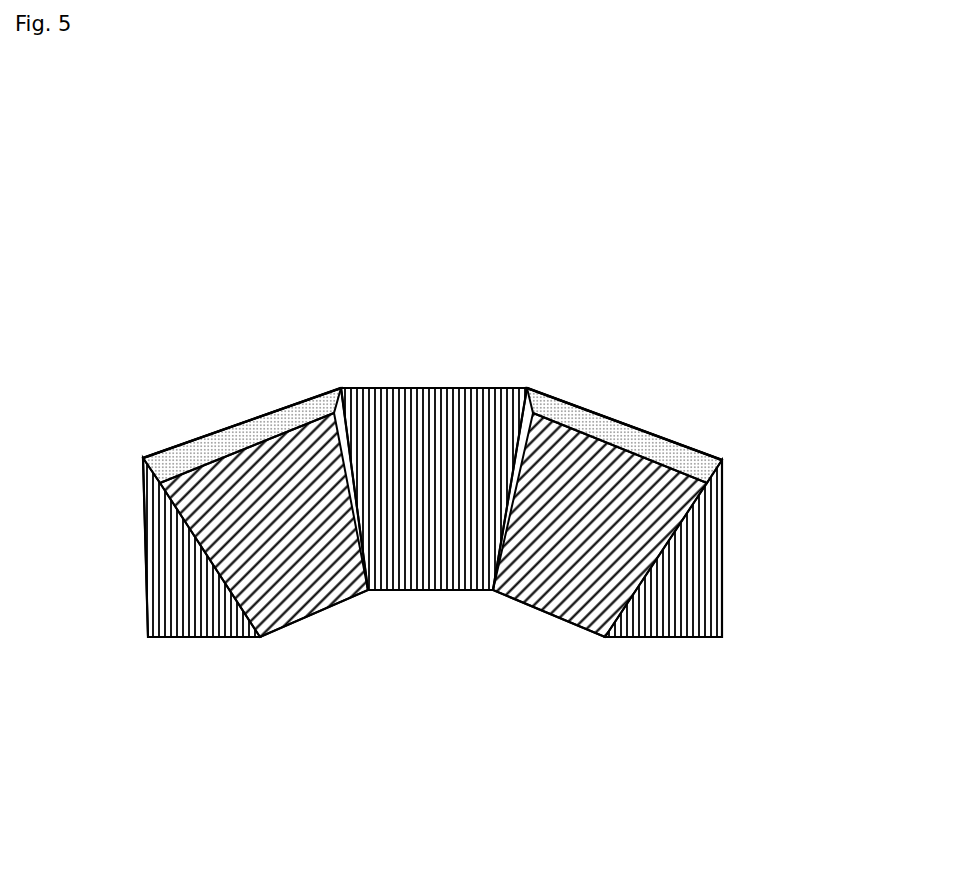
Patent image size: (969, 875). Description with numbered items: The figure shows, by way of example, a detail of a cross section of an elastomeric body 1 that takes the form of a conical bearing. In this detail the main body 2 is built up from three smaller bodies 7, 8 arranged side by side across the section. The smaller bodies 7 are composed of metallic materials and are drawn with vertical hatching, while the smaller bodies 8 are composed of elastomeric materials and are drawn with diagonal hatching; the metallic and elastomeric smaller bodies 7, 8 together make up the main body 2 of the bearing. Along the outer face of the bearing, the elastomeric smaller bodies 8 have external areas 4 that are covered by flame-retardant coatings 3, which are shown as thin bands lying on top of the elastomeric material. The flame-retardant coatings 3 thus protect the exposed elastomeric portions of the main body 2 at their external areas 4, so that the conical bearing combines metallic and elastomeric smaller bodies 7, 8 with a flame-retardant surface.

The elastomeric body 1 is at (107, 364).
The main body 2 is at (438, 636).
The flame-retardant coating 3 is at (228, 438).
The external area 4 is at (187, 462).
The smaller body 7 is at (669, 590).
The smaller body 8 is at (538, 562).